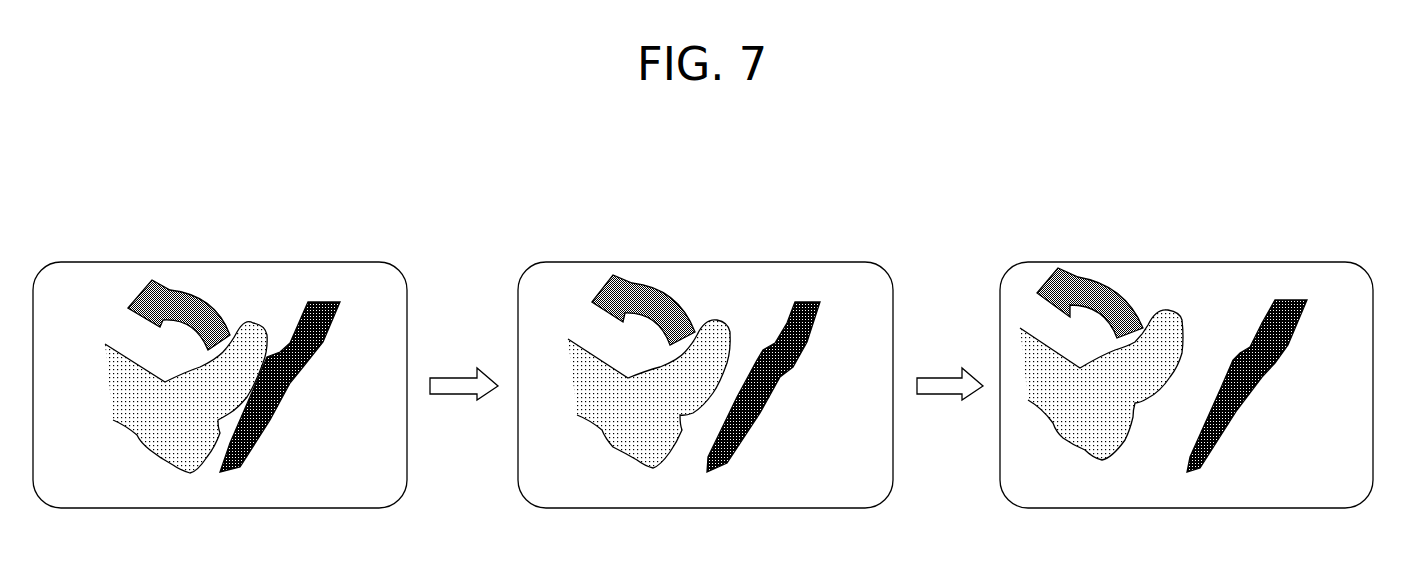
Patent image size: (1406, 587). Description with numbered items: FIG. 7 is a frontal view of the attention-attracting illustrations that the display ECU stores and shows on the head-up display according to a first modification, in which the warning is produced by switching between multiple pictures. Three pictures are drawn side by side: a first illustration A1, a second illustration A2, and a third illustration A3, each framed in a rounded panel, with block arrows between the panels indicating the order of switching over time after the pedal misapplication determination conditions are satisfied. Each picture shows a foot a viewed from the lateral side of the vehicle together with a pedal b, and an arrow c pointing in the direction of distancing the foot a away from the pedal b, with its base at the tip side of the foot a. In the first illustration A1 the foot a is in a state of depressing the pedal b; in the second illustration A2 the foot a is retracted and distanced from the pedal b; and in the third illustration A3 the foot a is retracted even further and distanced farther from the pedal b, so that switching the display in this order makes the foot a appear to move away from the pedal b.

The first illustration A1 is at (288, 262).
The second illustration A2 is at (777, 262).
The third illustration A3 is at (1257, 262).
The foot a is at (167, 467).
The pedal b is at (323, 342).
The arrow c is at (177, 290).